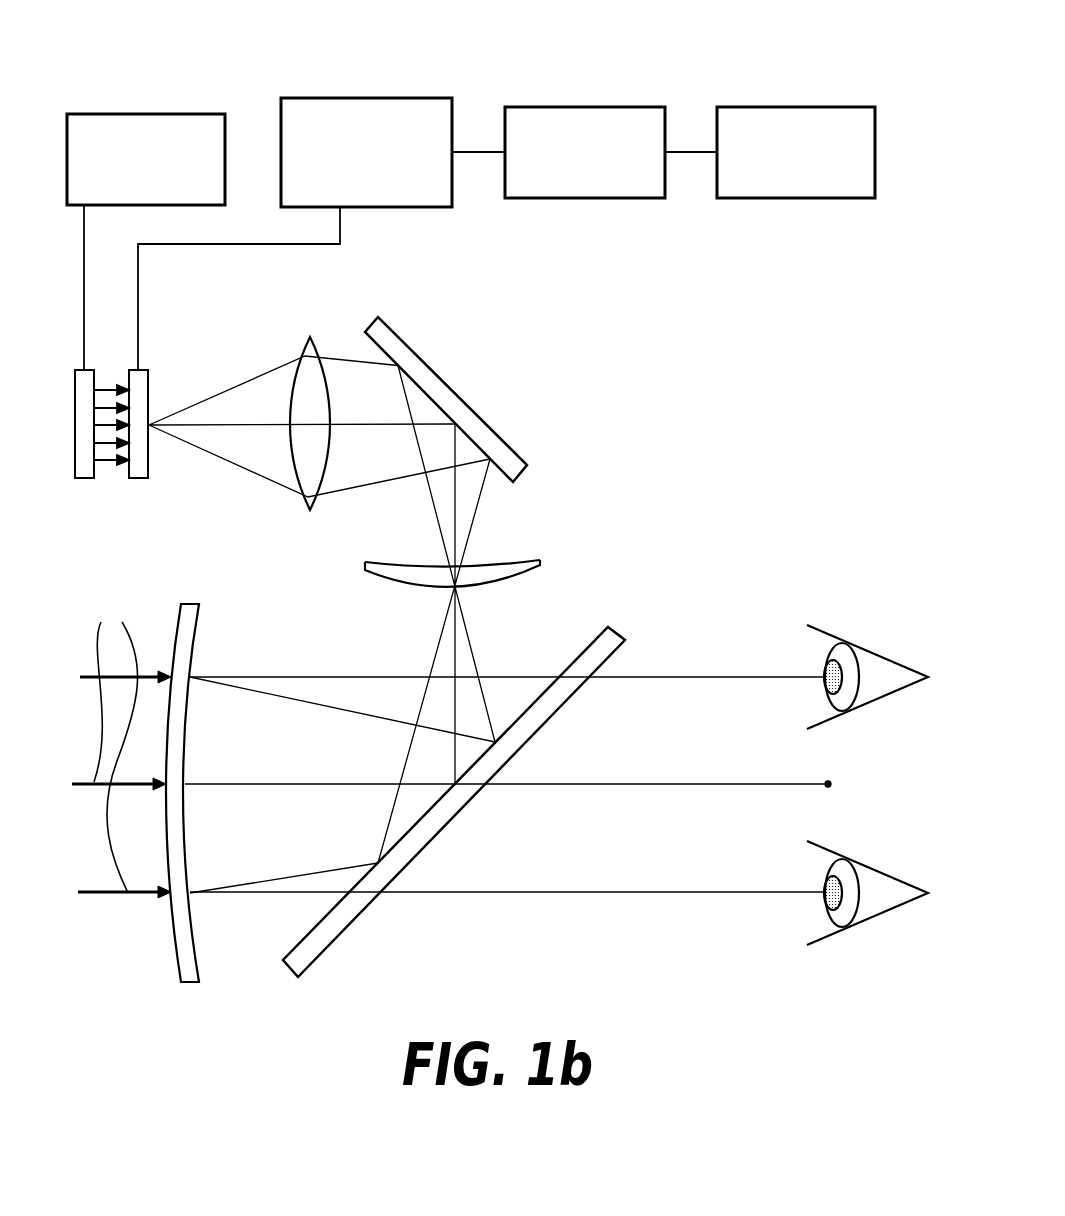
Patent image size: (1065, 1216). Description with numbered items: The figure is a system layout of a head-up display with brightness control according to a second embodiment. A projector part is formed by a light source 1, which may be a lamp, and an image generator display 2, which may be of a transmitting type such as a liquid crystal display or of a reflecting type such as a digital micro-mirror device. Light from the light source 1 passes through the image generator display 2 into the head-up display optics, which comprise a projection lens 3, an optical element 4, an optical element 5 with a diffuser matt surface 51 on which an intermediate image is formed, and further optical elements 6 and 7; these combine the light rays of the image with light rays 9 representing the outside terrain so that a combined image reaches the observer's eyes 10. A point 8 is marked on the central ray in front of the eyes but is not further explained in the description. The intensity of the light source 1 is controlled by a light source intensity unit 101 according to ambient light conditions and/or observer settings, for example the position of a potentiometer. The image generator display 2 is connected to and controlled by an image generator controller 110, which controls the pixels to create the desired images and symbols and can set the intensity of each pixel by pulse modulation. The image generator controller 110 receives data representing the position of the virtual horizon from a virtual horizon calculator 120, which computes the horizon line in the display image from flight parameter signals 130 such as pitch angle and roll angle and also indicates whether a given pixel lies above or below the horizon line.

The light source intensity unit 101 is at (150, 112).
The image generator controller 110 is at (365, 97).
The virtual horizon calculator 120 is at (583, 107).
The flight parameter signals 130 is at (798, 107).
The light source 1 is at (86, 479).
The image generator display 2 is at (140, 479).
The projection lens 3 is at (303, 373).
The optical element 4 is at (397, 350).
The optical element 5 is at (473, 558).
The diffuser matt surface 51 is at (510, 563).
The optical element 6 is at (620, 633).
The optical element 7 is at (188, 615).
The virtual image point 8 is at (828, 783).
The light rays representing the outside terrain 9 is at (106, 670).
The observer's eyes 10 is at (840, 700).